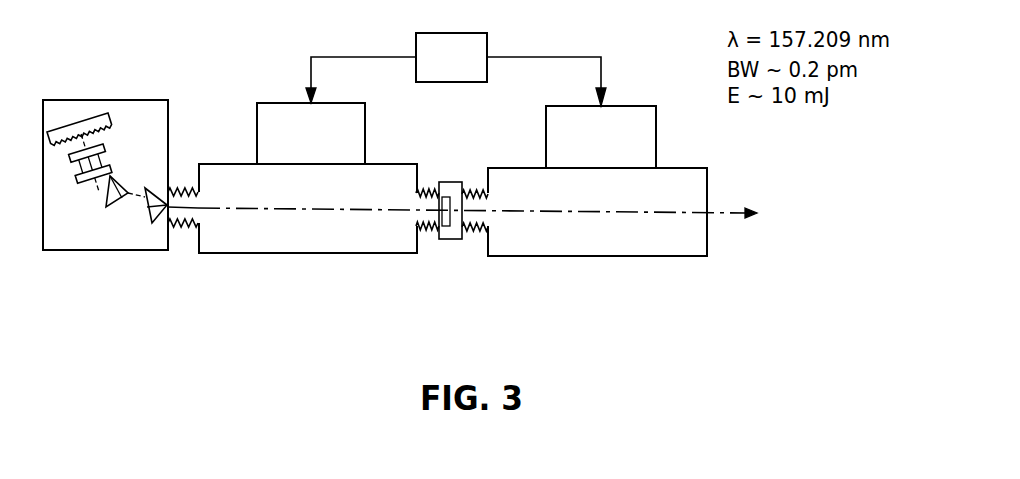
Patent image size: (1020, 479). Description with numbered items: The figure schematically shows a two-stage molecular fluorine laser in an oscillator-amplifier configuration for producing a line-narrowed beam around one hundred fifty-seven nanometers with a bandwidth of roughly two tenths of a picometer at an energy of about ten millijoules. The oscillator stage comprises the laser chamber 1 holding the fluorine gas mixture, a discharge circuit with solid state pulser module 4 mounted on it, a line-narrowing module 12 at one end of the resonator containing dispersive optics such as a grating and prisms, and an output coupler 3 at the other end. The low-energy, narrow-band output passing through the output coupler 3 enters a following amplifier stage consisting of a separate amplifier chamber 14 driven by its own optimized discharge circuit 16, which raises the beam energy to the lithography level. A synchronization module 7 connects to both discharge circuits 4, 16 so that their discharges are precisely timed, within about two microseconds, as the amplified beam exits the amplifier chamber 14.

The line-narrowing module 12 is at (113, 252).
The laser chamber 1 is at (310, 253).
The discharge circuit including solid state pulser module 4 is at (365, 130).
The synchronization module 7 is at (456, 69).
The output coupler 3 is at (446, 227).
The amplifier chamber 14 is at (577, 256).
The discharge circuit 16 is at (656, 132).